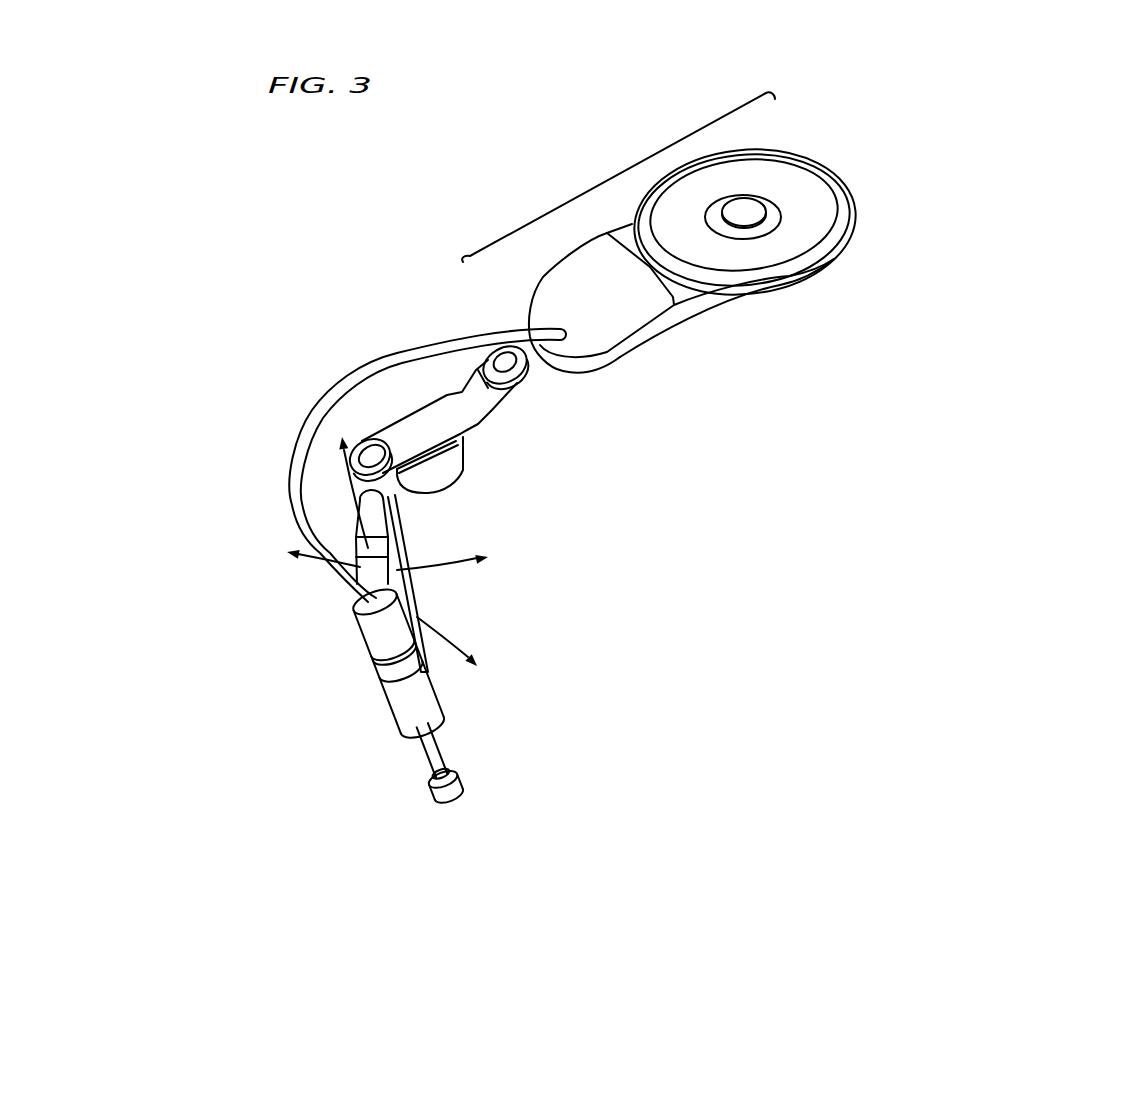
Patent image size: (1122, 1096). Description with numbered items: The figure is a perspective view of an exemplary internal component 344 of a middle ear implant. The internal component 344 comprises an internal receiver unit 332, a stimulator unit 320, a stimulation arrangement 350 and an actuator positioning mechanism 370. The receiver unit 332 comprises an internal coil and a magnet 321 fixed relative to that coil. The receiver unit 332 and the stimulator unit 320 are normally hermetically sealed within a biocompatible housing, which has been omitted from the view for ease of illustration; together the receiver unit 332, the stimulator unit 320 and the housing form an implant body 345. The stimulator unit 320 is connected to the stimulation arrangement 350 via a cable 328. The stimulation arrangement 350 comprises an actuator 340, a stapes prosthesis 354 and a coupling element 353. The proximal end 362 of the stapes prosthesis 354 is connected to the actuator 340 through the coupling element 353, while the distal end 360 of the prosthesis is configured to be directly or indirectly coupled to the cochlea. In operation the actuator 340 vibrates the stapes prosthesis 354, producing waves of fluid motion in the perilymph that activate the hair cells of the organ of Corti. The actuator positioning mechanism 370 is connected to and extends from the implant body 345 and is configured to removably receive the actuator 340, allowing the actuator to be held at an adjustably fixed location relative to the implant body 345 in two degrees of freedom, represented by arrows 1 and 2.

The internal component 344 is at (782, 264).
The implant body 345 is at (629, 168).
The internal receiver unit 332 is at (832, 262).
The magnet 321 is at (747, 208).
The stimulator unit 320 is at (640, 340).
The cable 328 is at (356, 379).
The stimulation arrangement 350 is at (478, 628).
The actuator positioning mechanism 370 is at (515, 492).
The actuator 340 is at (423, 683).
The coupling element 353 is at (437, 740).
The stapes prosthesis 354 is at (399, 842).
The distal end 360 is at (460, 797).
The proximal end 362 is at (430, 777).
The first degree of freedom arrow 1 is at (448, 570).
The second degree of freedom arrow 2 is at (344, 493).